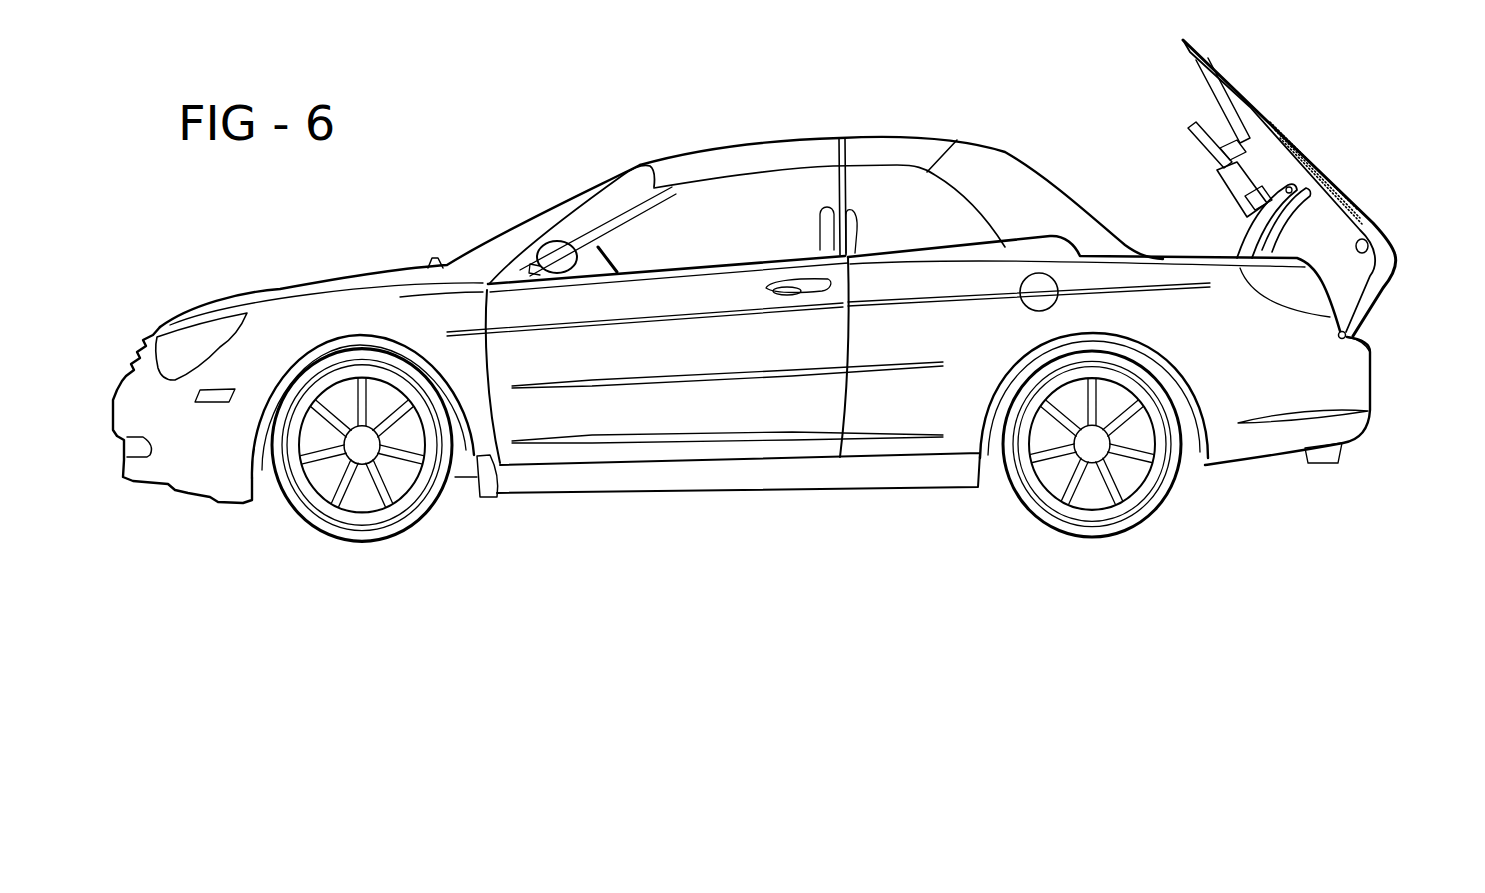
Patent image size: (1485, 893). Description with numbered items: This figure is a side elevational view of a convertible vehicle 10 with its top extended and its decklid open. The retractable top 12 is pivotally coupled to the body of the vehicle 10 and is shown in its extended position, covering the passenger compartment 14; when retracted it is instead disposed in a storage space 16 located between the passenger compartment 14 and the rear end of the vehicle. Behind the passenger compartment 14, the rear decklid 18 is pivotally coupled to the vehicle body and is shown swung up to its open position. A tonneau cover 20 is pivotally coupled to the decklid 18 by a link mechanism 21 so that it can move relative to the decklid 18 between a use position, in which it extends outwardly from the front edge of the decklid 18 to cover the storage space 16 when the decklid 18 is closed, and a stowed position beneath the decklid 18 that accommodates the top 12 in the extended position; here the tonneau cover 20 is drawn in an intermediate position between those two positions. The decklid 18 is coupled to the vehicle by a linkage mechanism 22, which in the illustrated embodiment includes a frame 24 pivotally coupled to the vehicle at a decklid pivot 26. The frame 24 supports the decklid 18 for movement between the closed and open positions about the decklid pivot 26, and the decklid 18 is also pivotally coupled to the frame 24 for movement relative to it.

The convertible vehicle 10 is at (460, 115).
The retractable top 12 is at (763, 153).
The passenger compartment 14 is at (693, 258).
The storage space 16 is at (1158, 260).
The rear decklid 18 is at (1287, 120).
The tonneau cover 20 is at (1197, 143).
The link mechanism 21 is at (1297, 213).
The linkage mechanism 22 is at (1240, 240).
The frame 24 is at (1376, 254).
The decklid pivot 26 is at (1360, 320).